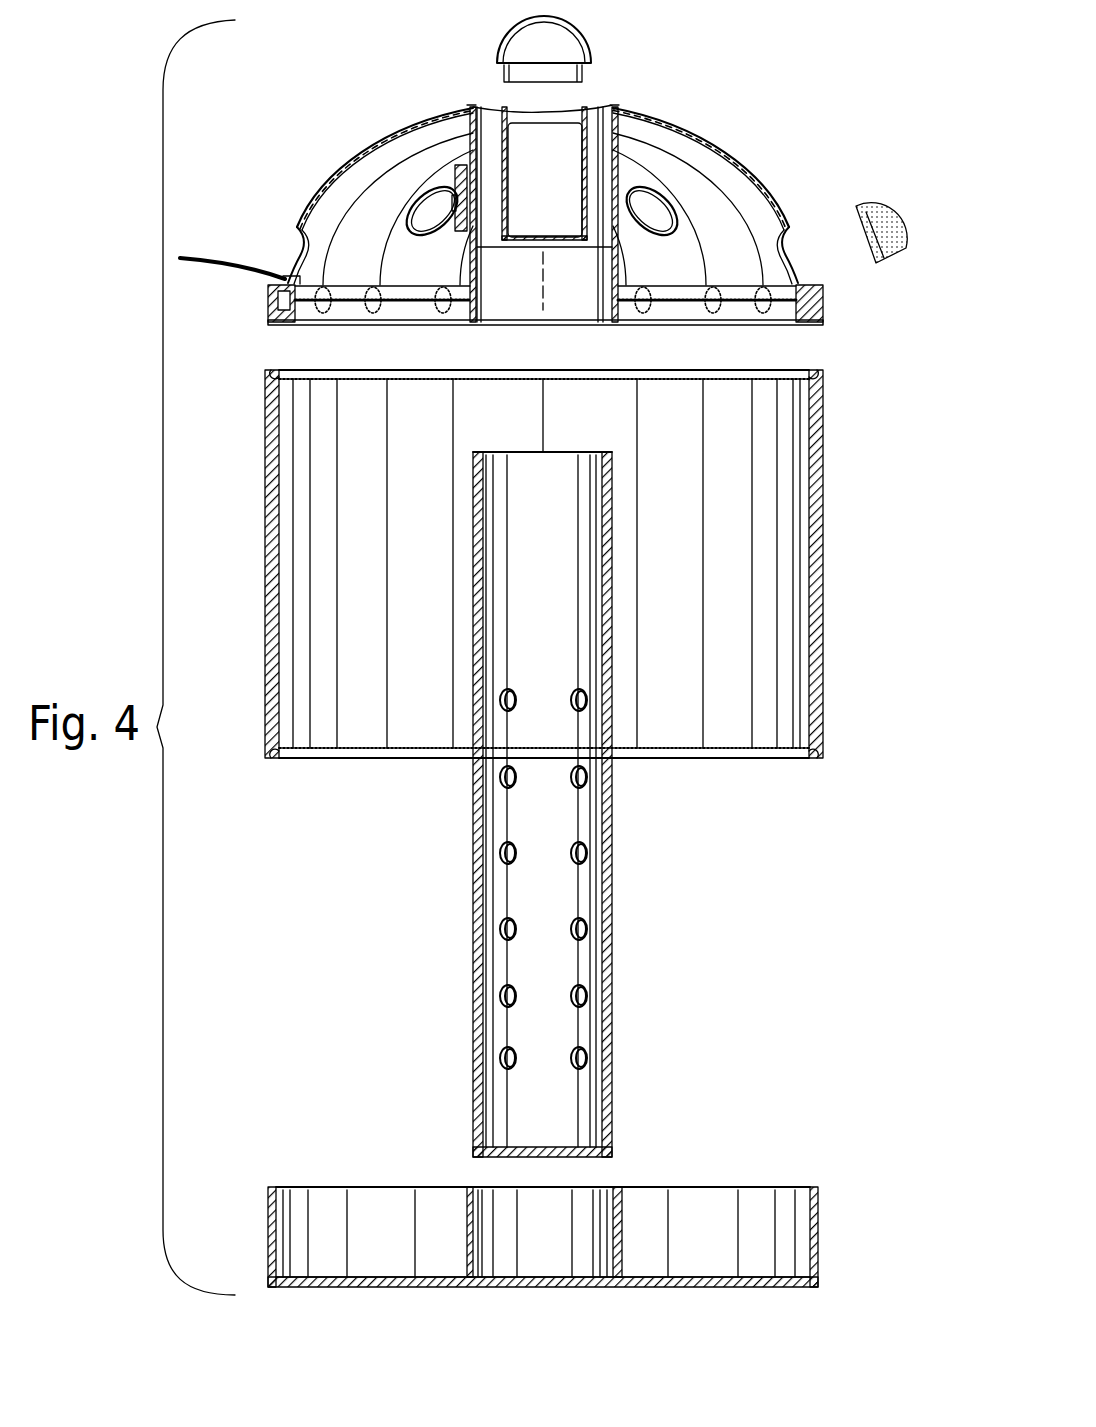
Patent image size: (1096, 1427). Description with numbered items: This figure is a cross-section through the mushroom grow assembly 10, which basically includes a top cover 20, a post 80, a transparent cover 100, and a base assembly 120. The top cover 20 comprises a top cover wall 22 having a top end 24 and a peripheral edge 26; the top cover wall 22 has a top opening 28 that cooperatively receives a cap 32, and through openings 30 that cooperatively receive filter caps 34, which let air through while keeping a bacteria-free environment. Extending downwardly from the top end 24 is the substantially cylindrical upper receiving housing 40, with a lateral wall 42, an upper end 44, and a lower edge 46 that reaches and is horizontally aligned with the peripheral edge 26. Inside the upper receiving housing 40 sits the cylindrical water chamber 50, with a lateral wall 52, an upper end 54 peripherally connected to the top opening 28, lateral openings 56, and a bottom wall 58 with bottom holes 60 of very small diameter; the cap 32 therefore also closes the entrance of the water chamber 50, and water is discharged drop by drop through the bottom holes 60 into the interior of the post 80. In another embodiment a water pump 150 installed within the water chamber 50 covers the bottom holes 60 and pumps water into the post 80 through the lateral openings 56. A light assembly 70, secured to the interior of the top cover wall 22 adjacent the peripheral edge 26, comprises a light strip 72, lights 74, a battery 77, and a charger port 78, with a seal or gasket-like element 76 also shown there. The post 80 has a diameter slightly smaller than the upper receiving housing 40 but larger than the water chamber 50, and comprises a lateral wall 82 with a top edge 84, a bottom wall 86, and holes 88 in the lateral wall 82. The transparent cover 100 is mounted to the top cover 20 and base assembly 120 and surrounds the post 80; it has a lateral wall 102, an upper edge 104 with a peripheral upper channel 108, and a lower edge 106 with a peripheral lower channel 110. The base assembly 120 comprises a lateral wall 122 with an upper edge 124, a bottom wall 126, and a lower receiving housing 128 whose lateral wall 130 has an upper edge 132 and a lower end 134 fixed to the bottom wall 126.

The mushroom grow assembly 10 is at (872, 93).
The top cover 20 is at (316, 146).
The top cover wall 22 is at (705, 135).
The top end 24 is at (602, 107).
The peripheral edge 26 is at (740, 343).
The top opening 28 is at (522, 133).
The through openings 30 is at (660, 232).
The cap 32 is at (586, 50).
The filter caps 34 is at (895, 212).
The upper receiving housing 40 is at (646, 158).
The lateral wall 42 is at (630, 160).
The upper end 44 is at (641, 112).
The lower edge 46 is at (618, 322).
The water chamber 50 is at (604, 145).
The lateral wall 52 is at (505, 165).
The upper end 54 is at (528, 122).
The lateral openings 56 is at (502, 160).
The bottom wall 58 is at (455, 208).
The bottom holes 60 is at (448, 285).
The light assembly 70 is at (272, 312).
The light strip 72 is at (312, 312).
The lights 74 is at (443, 305).
The seal 76 is at (250, 257).
The battery 77 is at (278, 301).
The charger port 78 is at (277, 278).
The post 80 is at (460, 925).
The lateral wall 82 is at (615, 956).
The top edge 84 is at (530, 452).
The bottom wall 86 is at (495, 1160).
The holes 88 is at (504, 779).
The transparent cover 100 is at (258, 549).
The lateral wall 102 is at (824, 566).
The upper edge 104 is at (762, 372).
The lower edge 106 is at (666, 760).
The peripheral upper channel 108 is at (824, 373).
The peripheral lower channel 110 is at (270, 759).
The base assembly 120 is at (280, 1170).
The lateral wall 122 is at (325, 1242).
The upper edge 124 is at (785, 1187).
The bottom wall 126 is at (765, 1289).
The lower receiving housing 128 is at (632, 1222).
The lateral wall 130 is at (622, 1200).
The upper edge 132 is at (618, 1190).
The lower end 134 is at (455, 1275).
The water pump 150 is at (530, 108).